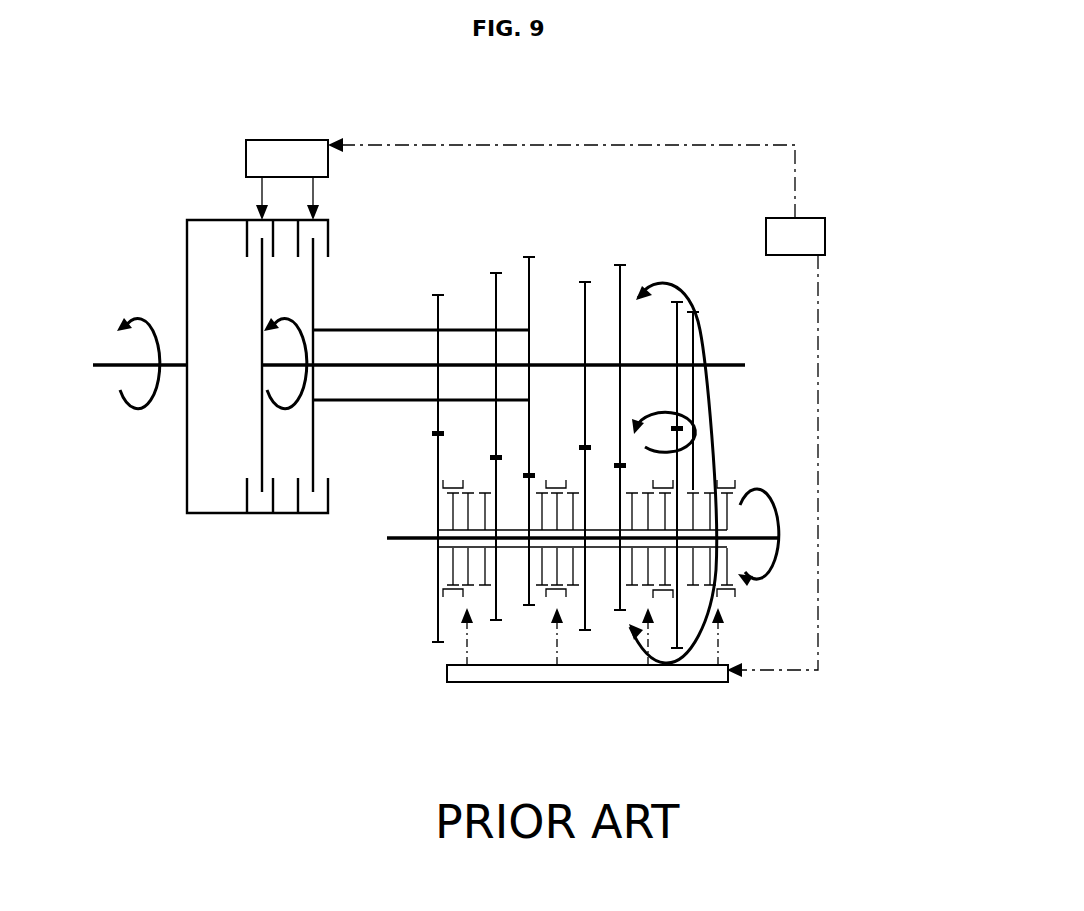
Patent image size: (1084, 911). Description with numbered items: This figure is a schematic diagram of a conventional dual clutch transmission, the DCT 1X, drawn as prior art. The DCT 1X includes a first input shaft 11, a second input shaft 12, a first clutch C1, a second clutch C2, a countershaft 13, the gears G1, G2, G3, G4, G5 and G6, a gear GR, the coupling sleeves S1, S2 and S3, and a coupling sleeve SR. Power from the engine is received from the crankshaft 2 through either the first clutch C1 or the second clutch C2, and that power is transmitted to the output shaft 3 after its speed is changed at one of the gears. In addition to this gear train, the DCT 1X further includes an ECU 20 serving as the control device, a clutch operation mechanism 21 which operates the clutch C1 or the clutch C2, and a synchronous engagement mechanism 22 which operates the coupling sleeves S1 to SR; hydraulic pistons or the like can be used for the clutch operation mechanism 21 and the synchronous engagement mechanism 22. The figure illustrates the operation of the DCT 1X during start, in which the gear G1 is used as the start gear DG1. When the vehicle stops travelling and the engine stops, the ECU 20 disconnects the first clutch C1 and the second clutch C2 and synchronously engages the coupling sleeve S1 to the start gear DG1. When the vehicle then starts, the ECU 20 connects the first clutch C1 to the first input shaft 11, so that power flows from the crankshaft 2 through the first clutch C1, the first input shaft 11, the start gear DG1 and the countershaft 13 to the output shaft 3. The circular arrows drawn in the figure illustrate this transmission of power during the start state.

The DCT 1X is at (826, 279).
The crankshaft 2 is at (110, 362).
The output shaft 3 is at (780, 537).
The first input shaft 11 is at (717, 360).
The second input shaft 12 is at (348, 328).
The countershaft 13 is at (385, 540).
The ECU 20 is at (826, 228).
The clutch operation mechanism 21 is at (246, 158).
The synchronous engagement mechanism 22 is at (447, 667).
The first clutch C1 is at (257, 268).
The second clutch C2 is at (310, 283).
The gear G1 is at (677, 302).
The gear G2 is at (438, 294).
The gear G3 is at (585, 282).
The gear G4 is at (496, 273).
The gear G5 is at (620, 265).
The gear G6 is at (529, 257).
The start gear DG1 is at (730, 398).
The gear GR is at (693, 310).
The coupling sleeve S1 is at (660, 572).
The coupling sleeve S2 is at (460, 568).
The coupling sleeve S3 is at (563, 572).
The coupling sleeve SR is at (733, 587).